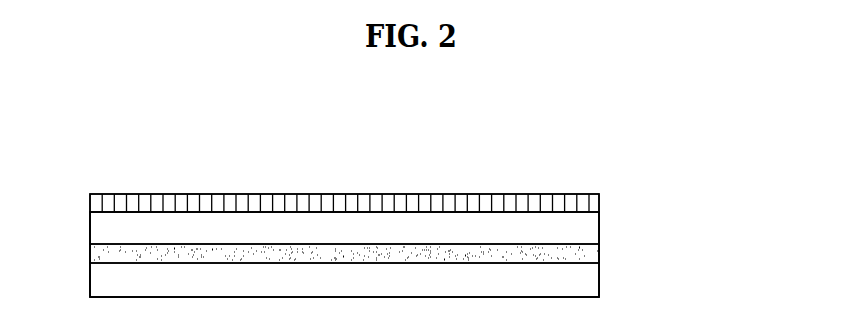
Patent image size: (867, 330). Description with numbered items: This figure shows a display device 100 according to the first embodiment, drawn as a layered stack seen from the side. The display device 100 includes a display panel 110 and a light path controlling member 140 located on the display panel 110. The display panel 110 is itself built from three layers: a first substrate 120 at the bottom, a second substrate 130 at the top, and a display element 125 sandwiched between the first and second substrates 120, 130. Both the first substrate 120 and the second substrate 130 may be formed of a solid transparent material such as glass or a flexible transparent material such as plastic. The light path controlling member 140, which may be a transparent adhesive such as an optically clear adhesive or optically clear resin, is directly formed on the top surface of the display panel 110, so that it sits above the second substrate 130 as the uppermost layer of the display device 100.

The display device 100 is at (614, 164).
The display panel 110 is at (700, 214).
The first substrate 120 is at (585, 280).
The display element 125 is at (585, 253).
The second substrate 130 is at (585, 229).
The light path controlling member 140 is at (152, 194).